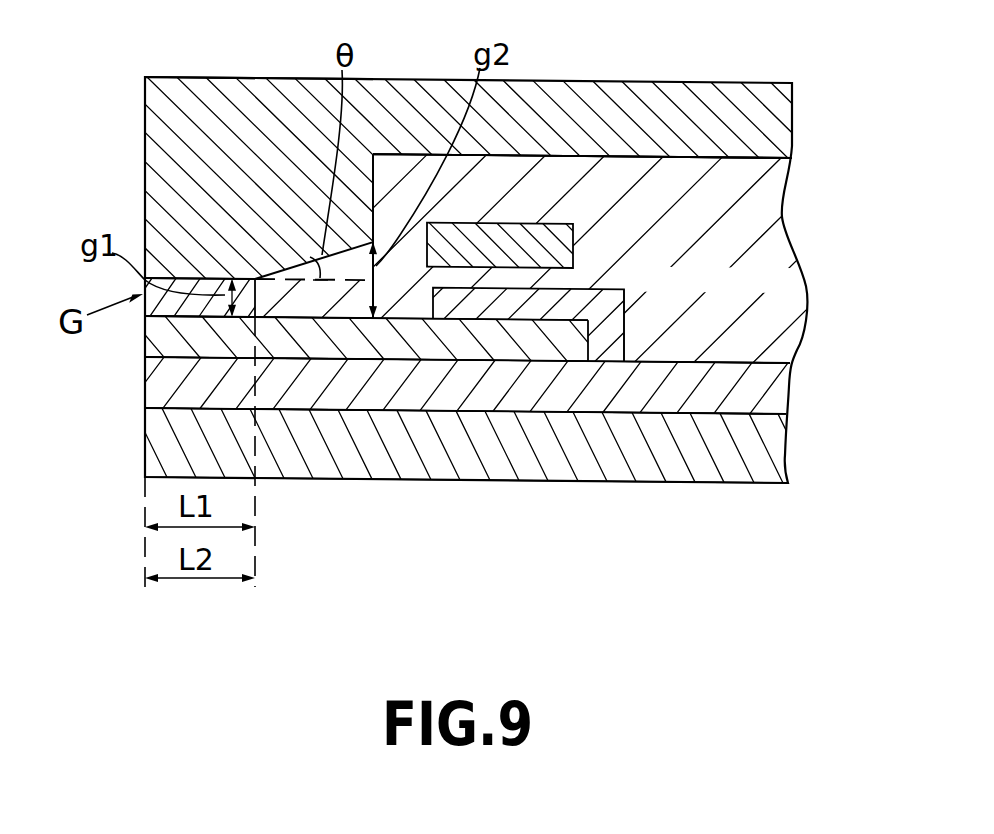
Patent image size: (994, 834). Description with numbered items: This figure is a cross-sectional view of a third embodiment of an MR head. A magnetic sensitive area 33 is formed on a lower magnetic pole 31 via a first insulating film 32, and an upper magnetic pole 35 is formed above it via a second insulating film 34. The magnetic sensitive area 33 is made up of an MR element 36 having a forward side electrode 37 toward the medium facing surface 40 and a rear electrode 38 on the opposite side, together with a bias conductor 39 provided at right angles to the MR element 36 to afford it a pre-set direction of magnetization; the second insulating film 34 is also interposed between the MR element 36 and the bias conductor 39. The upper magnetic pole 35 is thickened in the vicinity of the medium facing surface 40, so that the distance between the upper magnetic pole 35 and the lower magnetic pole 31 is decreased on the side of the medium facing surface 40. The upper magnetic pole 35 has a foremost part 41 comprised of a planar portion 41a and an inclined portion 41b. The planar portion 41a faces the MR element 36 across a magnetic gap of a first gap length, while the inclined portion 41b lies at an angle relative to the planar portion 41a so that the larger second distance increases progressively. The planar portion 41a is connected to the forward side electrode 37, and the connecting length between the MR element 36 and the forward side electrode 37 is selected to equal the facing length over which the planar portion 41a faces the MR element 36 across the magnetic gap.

The lower magnetic pole 31 is at (760, 456).
The first insulating film 32 is at (753, 395).
The magnetic sensitive area 33 is at (648, 283).
The second insulating film 34 is at (770, 212).
The upper magnetic pole 35 is at (770, 110).
The MR element 36 is at (460, 342).
The forward side electrode 37 is at (177, 308).
The rear electrode 38 is at (613, 344).
The bias conductor 39 is at (578, 226).
The medium facing surface 40 is at (145, 110).
The foremost part 41 is at (302, 284).
The planar portion 41a is at (197, 284).
The inclined portion 41b is at (356, 251).